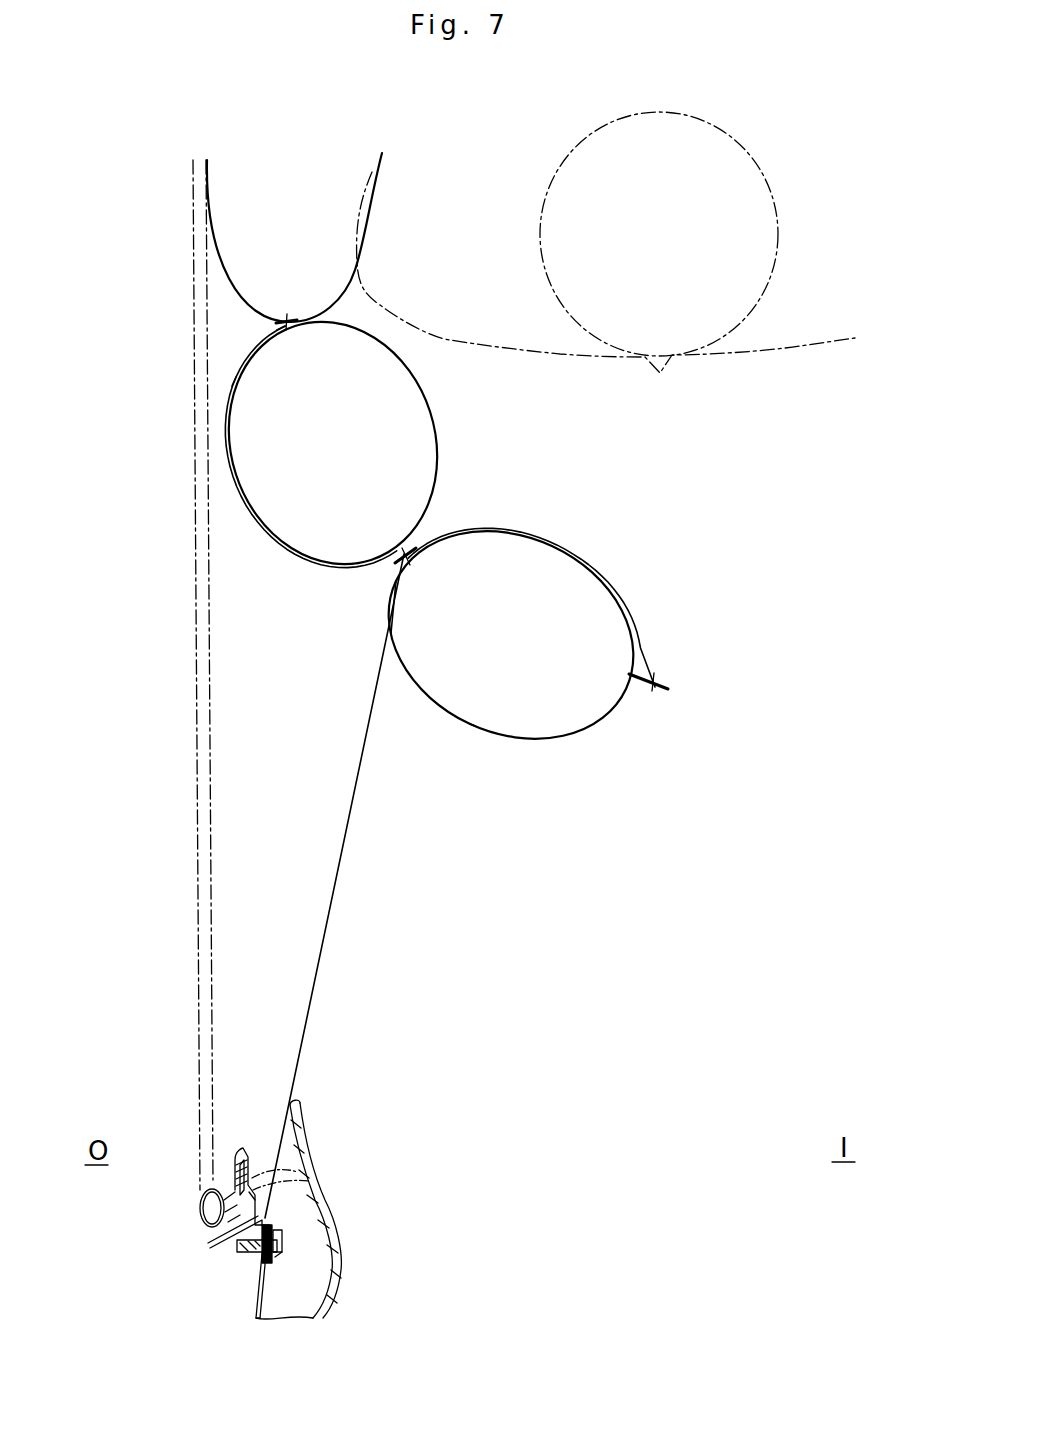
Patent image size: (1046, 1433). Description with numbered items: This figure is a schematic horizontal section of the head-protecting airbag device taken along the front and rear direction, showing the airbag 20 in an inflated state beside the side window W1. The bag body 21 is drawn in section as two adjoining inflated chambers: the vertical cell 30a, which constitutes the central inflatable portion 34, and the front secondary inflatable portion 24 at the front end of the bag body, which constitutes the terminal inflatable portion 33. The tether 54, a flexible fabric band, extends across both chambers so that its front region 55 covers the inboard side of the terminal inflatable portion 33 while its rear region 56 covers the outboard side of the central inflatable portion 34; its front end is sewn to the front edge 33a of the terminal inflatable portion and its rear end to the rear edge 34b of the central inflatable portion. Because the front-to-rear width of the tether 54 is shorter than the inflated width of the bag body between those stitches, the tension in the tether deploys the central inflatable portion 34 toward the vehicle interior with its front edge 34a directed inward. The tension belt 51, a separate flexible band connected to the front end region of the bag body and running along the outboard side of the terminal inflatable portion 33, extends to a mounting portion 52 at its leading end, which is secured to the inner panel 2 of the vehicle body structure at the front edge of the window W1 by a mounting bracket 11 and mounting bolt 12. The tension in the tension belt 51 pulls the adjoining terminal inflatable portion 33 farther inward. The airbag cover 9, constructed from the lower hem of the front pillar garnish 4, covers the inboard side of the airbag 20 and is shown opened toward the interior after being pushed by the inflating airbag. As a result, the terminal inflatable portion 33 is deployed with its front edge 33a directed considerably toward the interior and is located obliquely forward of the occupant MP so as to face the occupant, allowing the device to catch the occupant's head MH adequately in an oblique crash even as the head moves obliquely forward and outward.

The side window W1 is at (197, 800).
The occupant's head MH is at (733, 338).
The occupant MP is at (790, 350).
The bag body 21 is at (458, 414).
The rear region of tether 56 is at (237, 473).
The vertical cell 30a is at (257, 515).
The central inflatable portion 34 is at (173, 479).
The rear edge of central inflatable portion 34b is at (290, 318).
The front edge of central inflatable portion 34a is at (395, 565).
The front secondary inflatable portion 24 is at (540, 745).
The terminal inflatable portion 33 is at (530, 811).
The tether 54 is at (483, 516).
The front region of tether 55 is at (592, 573).
The front edge of terminal inflatable portion 33a is at (640, 690).
The airbag 20 is at (616, 935).
The tension belt 51 is at (337, 941).
The airbag cover 9 is at (305, 1128).
The inner panel 2 is at (258, 1305).
The mounting portion 52 is at (260, 1262).
The mounting bolt 12 is at (283, 1242).
The mounting bracket 11 is at (275, 1257).
The front pillar garnish 4 is at (352, 1252).